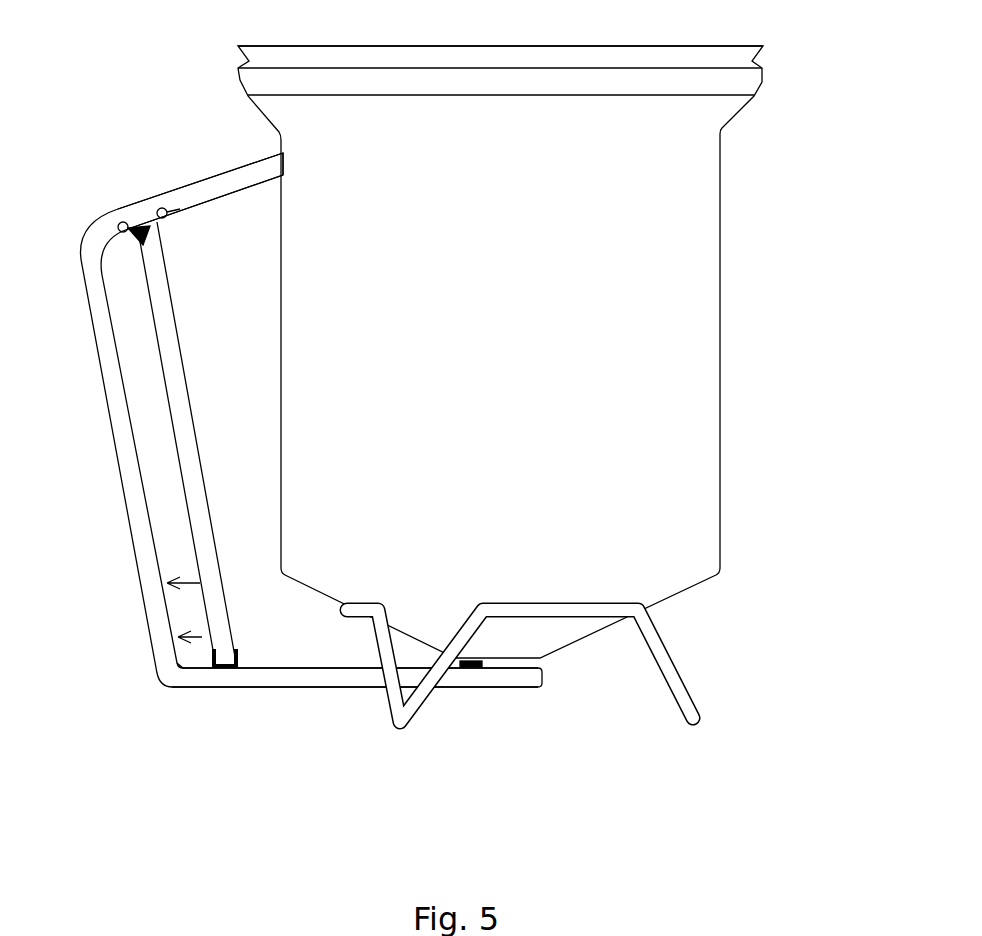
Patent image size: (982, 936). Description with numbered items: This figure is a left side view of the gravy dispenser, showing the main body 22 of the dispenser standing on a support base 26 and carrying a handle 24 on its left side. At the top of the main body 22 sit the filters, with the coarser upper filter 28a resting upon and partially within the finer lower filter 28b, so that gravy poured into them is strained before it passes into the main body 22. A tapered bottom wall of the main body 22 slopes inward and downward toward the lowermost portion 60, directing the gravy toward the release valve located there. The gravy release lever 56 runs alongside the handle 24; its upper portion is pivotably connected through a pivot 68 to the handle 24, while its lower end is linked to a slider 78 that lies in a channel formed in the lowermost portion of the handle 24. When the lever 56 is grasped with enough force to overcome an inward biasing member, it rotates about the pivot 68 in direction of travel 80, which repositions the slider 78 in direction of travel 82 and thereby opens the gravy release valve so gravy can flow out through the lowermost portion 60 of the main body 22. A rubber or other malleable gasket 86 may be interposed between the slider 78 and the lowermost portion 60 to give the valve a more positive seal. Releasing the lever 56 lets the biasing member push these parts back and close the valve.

The main body 22 is at (719, 333).
The upper filter 28a is at (765, 49).
The lower filter 28b is at (762, 82).
The handle 24 is at (110, 418).
The pivot 68 is at (142, 210).
The gasket 86 is at (492, 665).
The gravy release lever 56 is at (183, 483).
The direction of travel 80 is at (188, 575).
The direction of travel 82 is at (200, 637).
The slider 78 is at (227, 667).
The lowermost portion 60 is at (540, 659).
The support base 26 is at (680, 677).